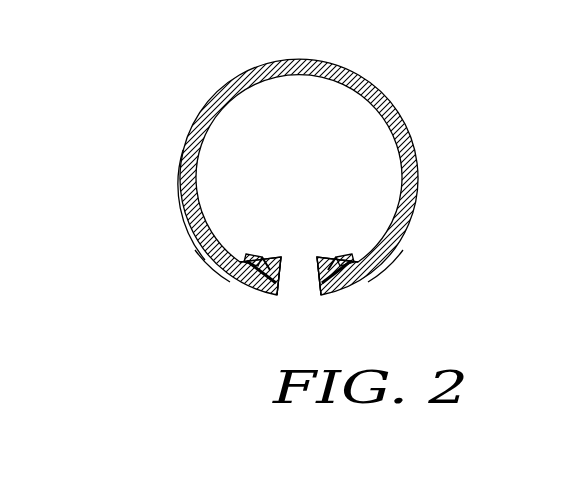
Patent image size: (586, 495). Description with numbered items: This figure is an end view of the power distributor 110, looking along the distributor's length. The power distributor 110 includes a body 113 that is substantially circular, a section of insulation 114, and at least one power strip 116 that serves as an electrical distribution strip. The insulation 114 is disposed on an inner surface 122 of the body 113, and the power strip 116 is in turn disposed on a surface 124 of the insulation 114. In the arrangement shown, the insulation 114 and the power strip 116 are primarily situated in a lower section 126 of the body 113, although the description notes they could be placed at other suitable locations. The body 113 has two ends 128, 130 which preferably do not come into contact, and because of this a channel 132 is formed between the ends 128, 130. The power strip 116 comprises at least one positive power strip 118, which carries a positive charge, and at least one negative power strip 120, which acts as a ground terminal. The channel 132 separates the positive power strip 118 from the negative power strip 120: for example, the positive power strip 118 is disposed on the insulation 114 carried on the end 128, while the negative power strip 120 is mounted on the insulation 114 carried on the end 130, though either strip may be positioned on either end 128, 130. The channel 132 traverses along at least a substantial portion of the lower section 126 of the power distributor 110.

The power distributor 110 is at (300, 53).
The body 113 is at (408, 126).
The insulation 114 is at (244, 249).
The power strip 116 is at (316, 243).
The positive power strip 118 is at (258, 252).
The negative power strip 120 is at (334, 247).
The inner surface 122 is at (199, 244).
The surface 124 is at (247, 262).
The lower section 126 is at (176, 226).
The end 128 is at (262, 291).
The end 130 is at (345, 292).
The channel 132 is at (300, 290).